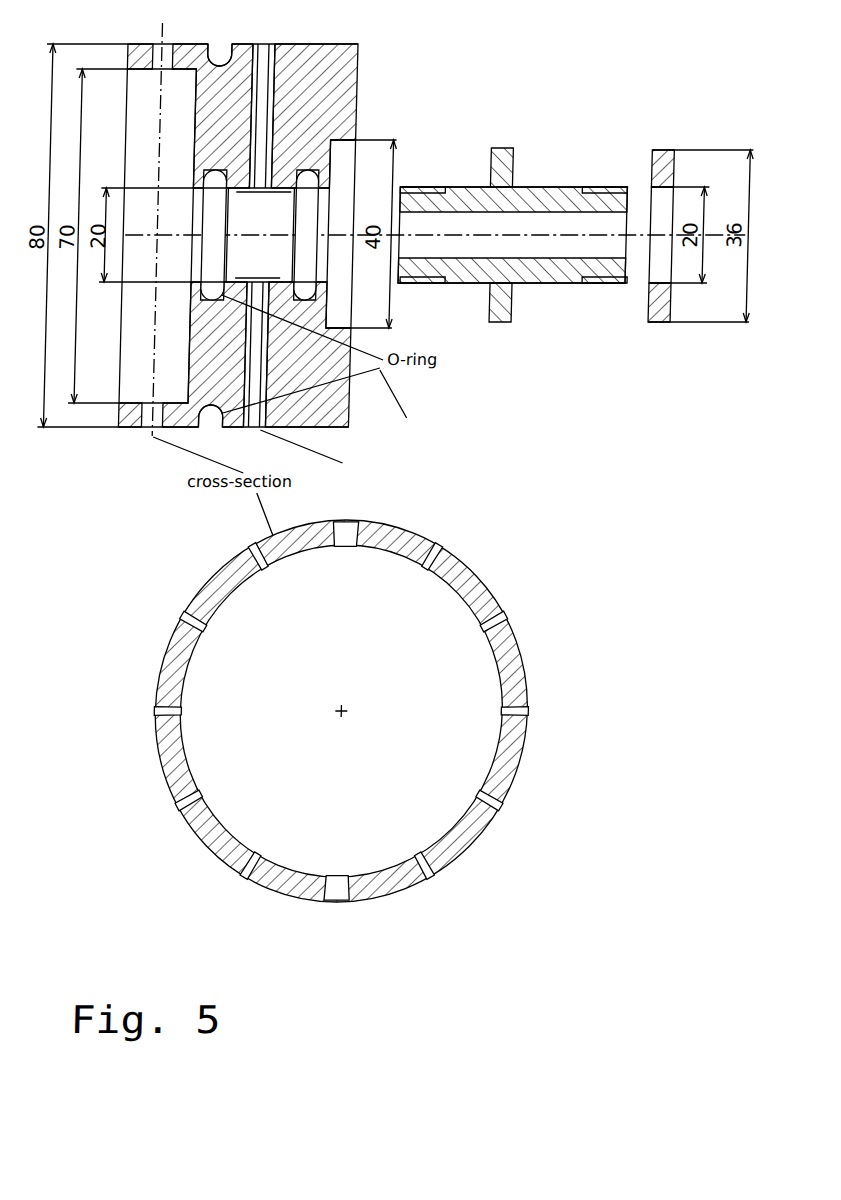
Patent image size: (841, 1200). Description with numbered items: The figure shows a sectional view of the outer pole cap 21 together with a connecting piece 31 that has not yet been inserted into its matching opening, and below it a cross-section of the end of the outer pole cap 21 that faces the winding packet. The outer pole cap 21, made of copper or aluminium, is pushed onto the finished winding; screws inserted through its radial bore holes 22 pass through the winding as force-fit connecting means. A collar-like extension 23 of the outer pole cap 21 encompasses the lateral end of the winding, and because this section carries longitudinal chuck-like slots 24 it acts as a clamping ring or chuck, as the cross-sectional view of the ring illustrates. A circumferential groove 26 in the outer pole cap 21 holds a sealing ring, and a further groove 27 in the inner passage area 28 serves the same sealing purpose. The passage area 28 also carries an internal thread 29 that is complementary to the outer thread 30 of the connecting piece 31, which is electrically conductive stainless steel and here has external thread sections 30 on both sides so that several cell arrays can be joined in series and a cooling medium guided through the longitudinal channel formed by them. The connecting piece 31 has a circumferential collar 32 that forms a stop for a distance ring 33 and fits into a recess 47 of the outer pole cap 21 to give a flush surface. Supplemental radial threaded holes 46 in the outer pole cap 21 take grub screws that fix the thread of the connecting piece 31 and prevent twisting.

The outer pole cap 21 is at (364, 85).
The radial bore hole 22 is at (173, 45).
The collar-like extension 23 is at (132, 417).
The chuck-like slot 24 is at (544, 711).
The circumferential groove 26 is at (230, 43).
The groove 27 is at (228, 182).
The inner passage area 28 is at (322, 212).
The internal thread 29 is at (255, 277).
The outer thread 30 is at (431, 186).
The connecting piece 31 is at (533, 180).
The collar 32 is at (505, 145).
The distance ring 33 is at (664, 321).
The radial threaded hole 46 is at (268, 53).
The recess 47 is at (347, 345).